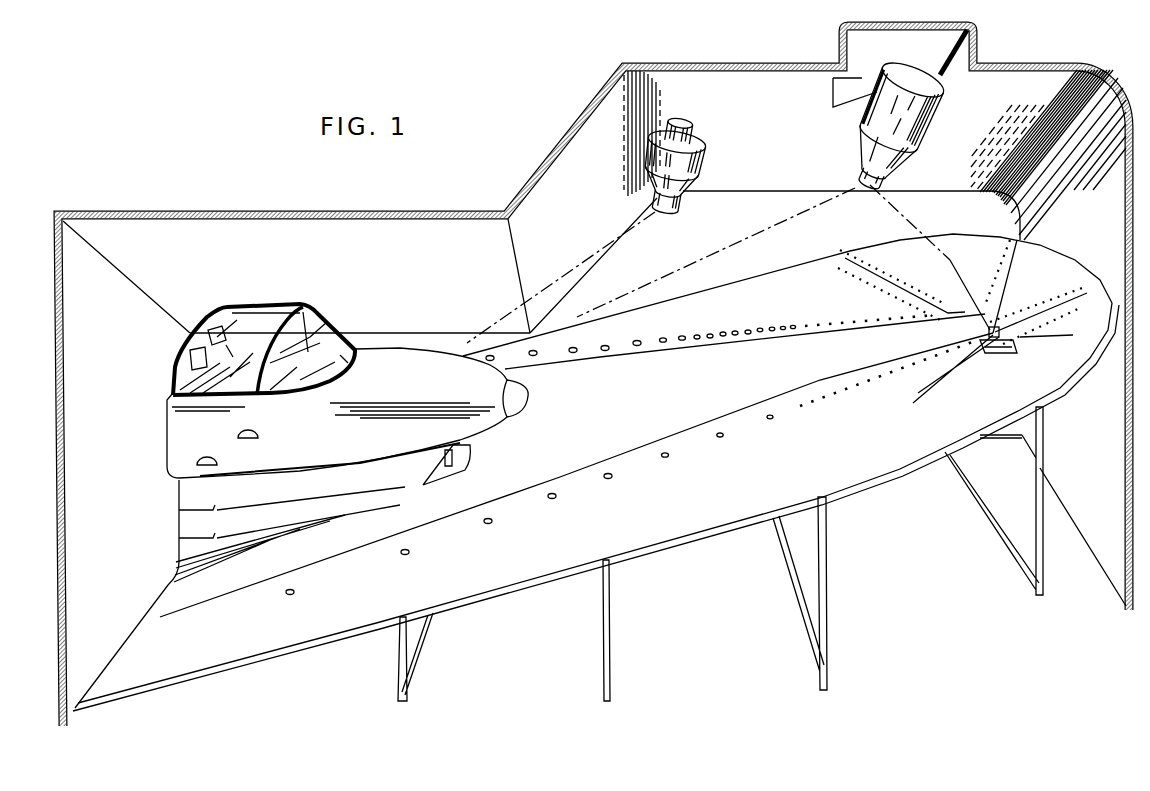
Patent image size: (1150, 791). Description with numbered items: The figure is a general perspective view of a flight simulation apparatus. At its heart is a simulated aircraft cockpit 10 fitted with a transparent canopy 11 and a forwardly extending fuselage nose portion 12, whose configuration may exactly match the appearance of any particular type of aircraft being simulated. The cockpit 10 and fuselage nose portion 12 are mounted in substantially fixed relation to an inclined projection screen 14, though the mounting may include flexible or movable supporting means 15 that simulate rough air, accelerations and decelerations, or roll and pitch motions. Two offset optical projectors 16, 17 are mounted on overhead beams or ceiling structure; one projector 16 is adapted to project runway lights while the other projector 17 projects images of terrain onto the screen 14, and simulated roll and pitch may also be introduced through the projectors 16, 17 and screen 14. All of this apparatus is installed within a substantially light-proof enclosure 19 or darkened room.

The simulated aircraft cockpit 10 is at (178, 430).
The transparent canopy 11 is at (323, 318).
The fuselage nose portion 12 is at (408, 367).
The inclined projection screen 14 is at (695, 520).
The flexible or movable supporting means 15 is at (473, 453).
The optical projector 16 is at (708, 150).
The optical projector 17 is at (927, 120).
The enclosure 19 is at (548, 166).